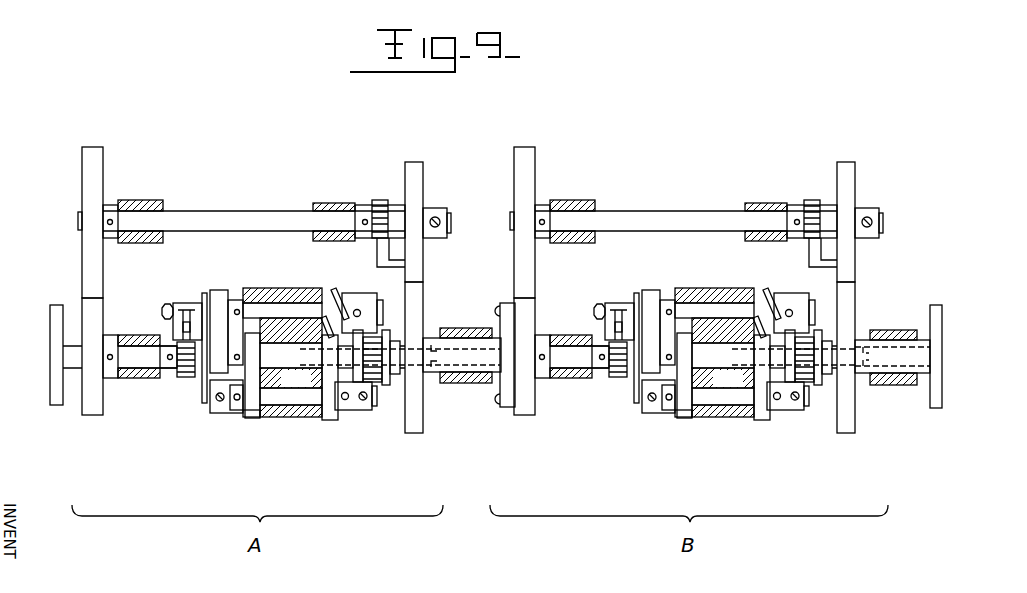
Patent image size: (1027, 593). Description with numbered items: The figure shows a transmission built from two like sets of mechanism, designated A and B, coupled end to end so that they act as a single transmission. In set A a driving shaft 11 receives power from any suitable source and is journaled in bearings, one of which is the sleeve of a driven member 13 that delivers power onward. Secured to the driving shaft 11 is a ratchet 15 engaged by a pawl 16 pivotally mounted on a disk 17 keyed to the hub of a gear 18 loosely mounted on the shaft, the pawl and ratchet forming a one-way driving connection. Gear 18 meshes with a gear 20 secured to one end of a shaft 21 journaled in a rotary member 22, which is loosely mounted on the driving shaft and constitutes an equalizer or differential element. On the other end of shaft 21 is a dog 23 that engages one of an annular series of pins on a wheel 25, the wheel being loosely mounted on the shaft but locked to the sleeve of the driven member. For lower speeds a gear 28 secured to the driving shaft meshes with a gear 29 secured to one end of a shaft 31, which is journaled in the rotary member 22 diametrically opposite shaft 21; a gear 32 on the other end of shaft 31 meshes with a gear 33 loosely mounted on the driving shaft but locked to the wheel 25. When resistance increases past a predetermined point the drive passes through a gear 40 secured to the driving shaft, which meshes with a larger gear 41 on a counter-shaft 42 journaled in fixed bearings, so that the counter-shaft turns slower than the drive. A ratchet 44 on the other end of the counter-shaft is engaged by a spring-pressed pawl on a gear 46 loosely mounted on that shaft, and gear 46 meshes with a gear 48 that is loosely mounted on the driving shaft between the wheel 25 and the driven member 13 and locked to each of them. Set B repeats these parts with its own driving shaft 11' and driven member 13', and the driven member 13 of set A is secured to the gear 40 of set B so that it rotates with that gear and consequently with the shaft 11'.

The driving shaft 11 is at (251, 355).
The driving shaft 11' is at (695, 390).
The driven member 13 is at (469, 345).
The driven member 13' is at (927, 346).
The ratchet 15 is at (183, 373).
The pawl 16 is at (182, 333).
The disk 17 is at (197, 300).
The gear 18 is at (203, 392).
The gear 20 is at (218, 292).
The shaft 21 is at (278, 313).
The rotary member 22 is at (272, 420).
The dog 23 is at (367, 302).
The wheel 25 is at (378, 386).
The gear 28 is at (255, 355).
The gear 29 is at (240, 415).
The shaft 31 is at (298, 402).
The gear 32 is at (330, 407).
The gear 33 is at (320, 370).
The gear 40 is at (92, 417).
The gear 41 is at (89, 152).
The counter-shaft 42 is at (228, 222).
The ratchet 44 is at (380, 210).
The gear 46 is at (413, 188).
The gear 48 is at (414, 435).